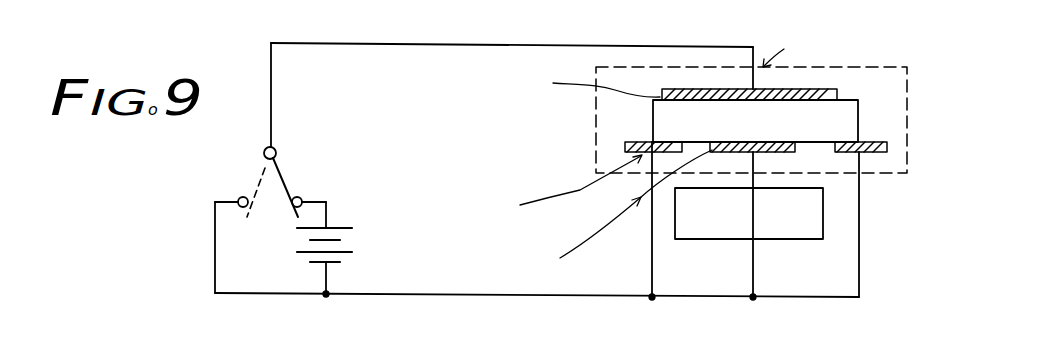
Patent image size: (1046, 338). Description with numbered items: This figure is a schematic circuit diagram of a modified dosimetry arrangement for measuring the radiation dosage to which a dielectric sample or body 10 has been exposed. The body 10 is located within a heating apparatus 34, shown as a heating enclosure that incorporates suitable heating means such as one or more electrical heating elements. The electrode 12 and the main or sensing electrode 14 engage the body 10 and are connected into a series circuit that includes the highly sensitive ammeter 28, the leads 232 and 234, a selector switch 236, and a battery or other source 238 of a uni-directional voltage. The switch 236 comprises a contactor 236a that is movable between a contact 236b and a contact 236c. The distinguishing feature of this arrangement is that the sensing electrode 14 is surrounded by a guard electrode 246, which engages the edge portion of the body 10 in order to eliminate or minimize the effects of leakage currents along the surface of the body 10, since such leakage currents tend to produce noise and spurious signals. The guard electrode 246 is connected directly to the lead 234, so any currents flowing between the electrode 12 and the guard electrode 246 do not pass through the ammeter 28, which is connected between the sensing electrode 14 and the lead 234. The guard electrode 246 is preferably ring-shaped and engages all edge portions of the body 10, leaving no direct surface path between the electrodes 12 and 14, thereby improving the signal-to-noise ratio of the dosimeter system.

The dielectric sample or body 10 is at (653, 117).
The electrode 12 is at (677, 90).
The electrode 14 is at (775, 152).
The ammeter 28 is at (793, 240).
The heating apparatus 34 is at (596, 137).
The lead 232 is at (753, 182).
The lead 234 is at (470, 297).
The selector switch 236 is at (308, 161).
The contactor 236a is at (278, 168).
The contact 236b is at (301, 198).
The contact 236c is at (243, 196).
The battery or other source of uni-directional voltage 238 is at (295, 243).
The guard electrode 246 is at (626, 147).